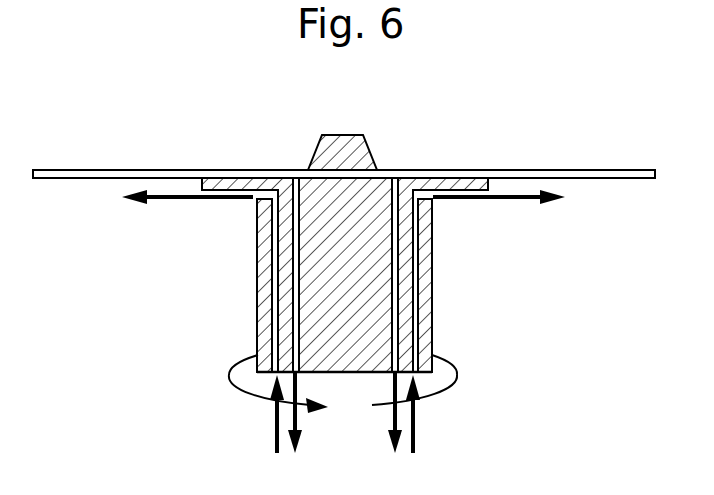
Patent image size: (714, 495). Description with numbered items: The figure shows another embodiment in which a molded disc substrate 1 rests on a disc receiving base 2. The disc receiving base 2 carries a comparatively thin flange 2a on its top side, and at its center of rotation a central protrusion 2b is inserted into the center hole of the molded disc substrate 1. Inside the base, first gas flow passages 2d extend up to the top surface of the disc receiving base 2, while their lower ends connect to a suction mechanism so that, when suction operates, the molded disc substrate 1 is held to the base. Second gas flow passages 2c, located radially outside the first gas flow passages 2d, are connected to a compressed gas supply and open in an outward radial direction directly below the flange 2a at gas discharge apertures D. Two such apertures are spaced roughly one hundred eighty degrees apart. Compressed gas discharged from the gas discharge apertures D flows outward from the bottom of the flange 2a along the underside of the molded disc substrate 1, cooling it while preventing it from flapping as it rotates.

The molded disc substrate 1 is at (573, 169).
The disc receiving base 2 is at (345, 338).
The flange 2a is at (232, 193).
The central protrusion 2b is at (352, 135).
The second gas flow passages 2c is at (415, 299).
The first gas flow passages 2d is at (398, 245).
The gas discharge apertures D is at (252, 205).